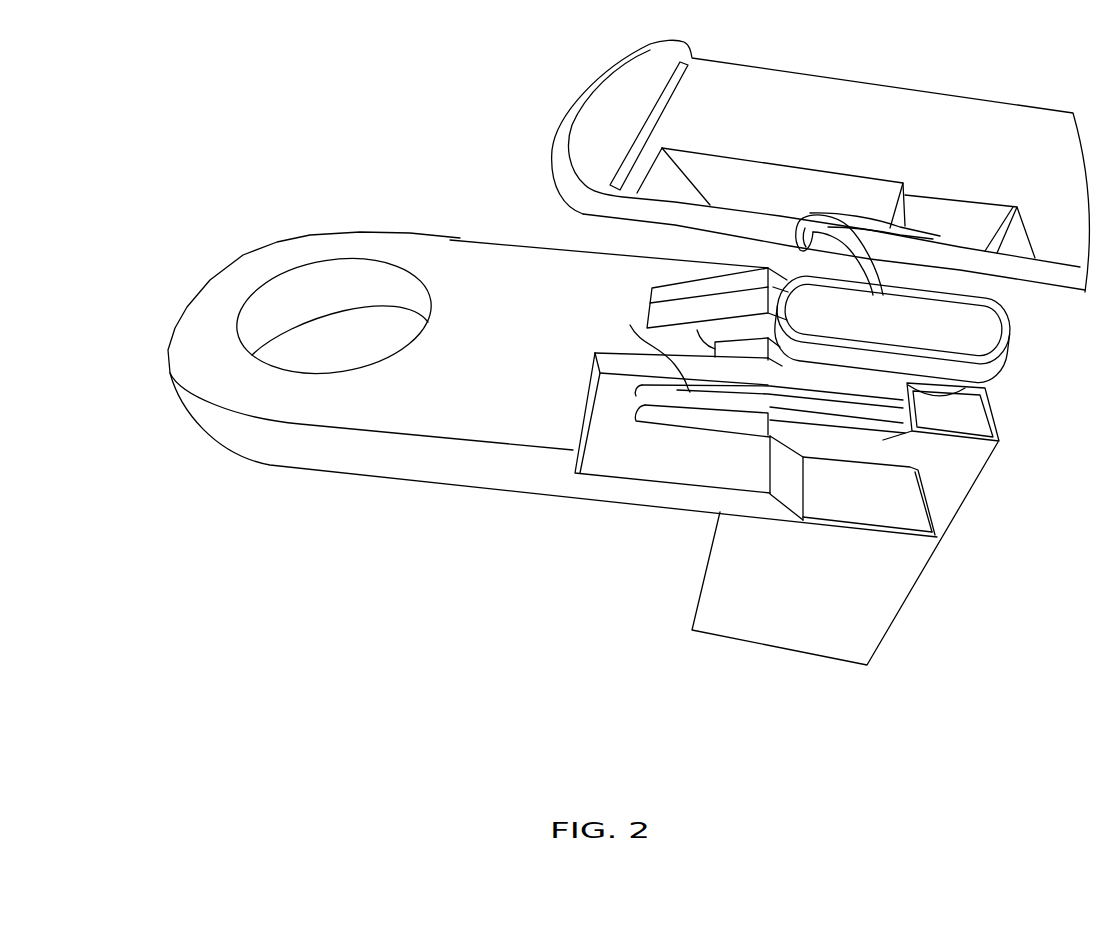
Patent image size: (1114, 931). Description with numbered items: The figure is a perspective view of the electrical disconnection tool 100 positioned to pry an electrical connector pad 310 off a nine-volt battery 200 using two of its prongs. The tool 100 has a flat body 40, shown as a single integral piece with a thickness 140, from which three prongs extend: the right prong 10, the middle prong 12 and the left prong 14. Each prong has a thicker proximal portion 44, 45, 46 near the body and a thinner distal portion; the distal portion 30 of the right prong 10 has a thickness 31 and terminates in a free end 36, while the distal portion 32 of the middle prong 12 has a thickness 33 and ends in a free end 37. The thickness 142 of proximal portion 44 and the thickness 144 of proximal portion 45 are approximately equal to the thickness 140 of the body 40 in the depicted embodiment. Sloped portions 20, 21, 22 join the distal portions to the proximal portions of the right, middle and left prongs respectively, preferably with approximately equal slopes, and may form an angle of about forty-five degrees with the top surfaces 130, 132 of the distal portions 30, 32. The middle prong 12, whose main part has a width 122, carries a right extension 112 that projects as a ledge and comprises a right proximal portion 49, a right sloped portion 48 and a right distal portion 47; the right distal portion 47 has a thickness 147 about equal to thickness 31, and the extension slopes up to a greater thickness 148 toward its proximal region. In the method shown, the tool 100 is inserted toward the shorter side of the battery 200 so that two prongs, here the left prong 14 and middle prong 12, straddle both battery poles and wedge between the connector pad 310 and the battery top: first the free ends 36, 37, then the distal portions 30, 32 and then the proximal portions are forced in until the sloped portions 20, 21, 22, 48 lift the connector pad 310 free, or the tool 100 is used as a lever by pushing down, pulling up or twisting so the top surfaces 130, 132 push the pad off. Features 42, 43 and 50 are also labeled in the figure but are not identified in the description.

The right prong 10 is at (633, 507).
The middle prong 12 is at (597, 325).
The left prong 14 is at (680, 285).
The sloped portion 20 is at (800, 490).
The sloped portion 21 is at (775, 392).
The sloped portion 22 is at (790, 292).
The distal portion 30 is at (867, 510).
The thickness 31 is at (915, 537).
The distal portion 32 is at (833, 428).
The thickness 33 is at (833, 384).
The free end 36 is at (937, 517).
The free end 37 is at (898, 420).
The body 40 is at (510, 287).
The step edge 42 is at (610, 445).
The slot 43 is at (640, 285).
The proximal portion 44 is at (657, 472).
The proximal portion 45 is at (690, 345).
The proximal portion 46 is at (732, 278).
The right distal portion 47 is at (887, 428).
The right sloped portion 48 is at (850, 383).
The right proximal portion 49 is at (674, 360).
The hole 50 is at (312, 337).
The electrical disconnection tool 100 is at (392, 507).
The right extension 112 is at (625, 304).
The width 122 is at (713, 348).
The top surface 130 is at (918, 490).
The top surface 132 is at (885, 407).
The thickness 140 is at (297, 427).
The thickness 142 is at (610, 505).
The thickness 144 is at (667, 360).
The thickness 147 is at (910, 400).
The thickness 148 is at (768, 493).
The battery 200 is at (707, 655).
The electrical connector pad 310 is at (965, 327).